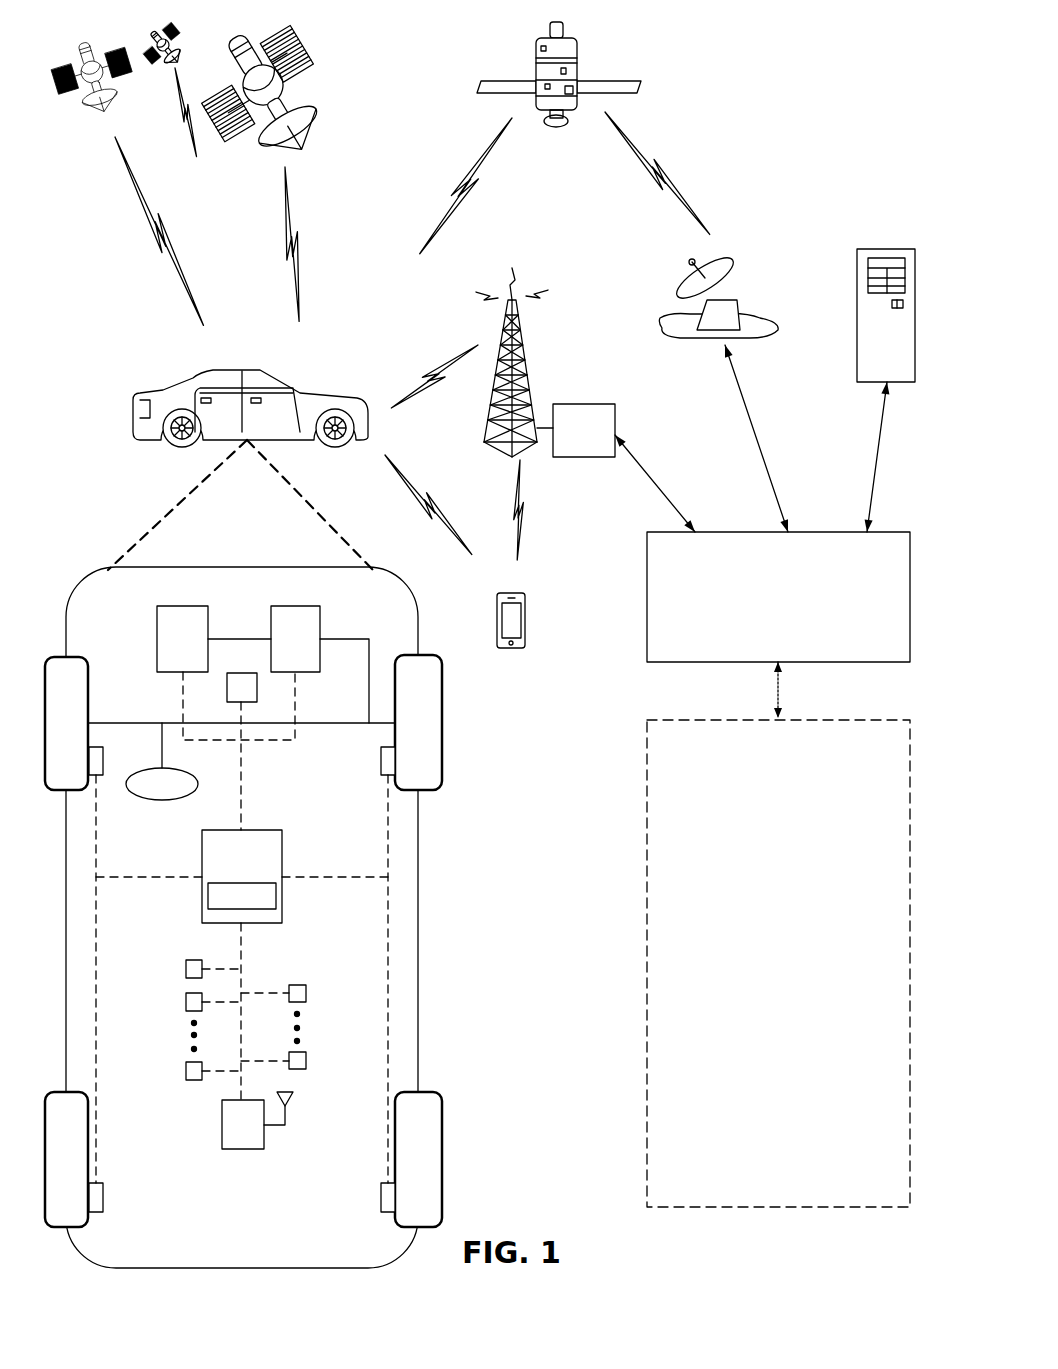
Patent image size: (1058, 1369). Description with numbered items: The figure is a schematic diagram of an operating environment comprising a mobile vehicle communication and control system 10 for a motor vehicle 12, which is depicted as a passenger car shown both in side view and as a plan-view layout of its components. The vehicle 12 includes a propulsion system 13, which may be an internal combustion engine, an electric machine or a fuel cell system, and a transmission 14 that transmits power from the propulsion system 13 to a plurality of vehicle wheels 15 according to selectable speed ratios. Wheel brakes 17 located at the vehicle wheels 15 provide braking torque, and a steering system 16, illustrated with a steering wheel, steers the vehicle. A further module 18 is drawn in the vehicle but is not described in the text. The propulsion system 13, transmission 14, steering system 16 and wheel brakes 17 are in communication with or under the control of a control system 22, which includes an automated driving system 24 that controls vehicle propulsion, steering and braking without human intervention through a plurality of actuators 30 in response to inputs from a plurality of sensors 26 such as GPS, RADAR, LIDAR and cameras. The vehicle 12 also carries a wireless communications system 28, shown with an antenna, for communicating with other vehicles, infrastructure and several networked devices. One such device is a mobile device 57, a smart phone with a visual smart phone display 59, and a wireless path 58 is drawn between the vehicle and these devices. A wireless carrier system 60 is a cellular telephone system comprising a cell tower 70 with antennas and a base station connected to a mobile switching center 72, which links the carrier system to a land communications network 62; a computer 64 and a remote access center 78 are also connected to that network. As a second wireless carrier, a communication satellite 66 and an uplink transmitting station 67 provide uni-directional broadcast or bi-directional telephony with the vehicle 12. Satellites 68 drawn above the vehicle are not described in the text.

The mobile vehicle communication and control system 10 is at (823, 134).
The motor vehicle 12 is at (140, 405).
The propulsion system 13 is at (157, 639).
The transmission 14 is at (320, 618).
The vehicle wheels 15 is at (88, 683).
The steering system 16 is at (165, 800).
The wheel brakes 17 is at (100, 775).
The sensor module 18 is at (241, 673).
The control system 22 is at (282, 885).
The automated driving system 24 is at (262, 909).
The sensors 26 is at (186, 969).
The wireless communications system 28 is at (243, 1149).
The actuators 30 is at (306, 993).
The mobile device 57 is at (536, 649).
The wireless link 58 is at (408, 483).
The visual smart phone display 59 is at (513, 622).
The wireless carrier system 60 is at (494, 462).
The land communications network 62 is at (910, 597).
The computer 64 is at (915, 315).
The communication satellite 66 is at (578, 52).
The uplink transmitting station 67 is at (753, 310).
The GNSS satellites 68 is at (320, 56).
The cell tower 70 is at (525, 352).
The mobile switching center 72 is at (615, 413).
The remote access center 78 is at (790, 1208).